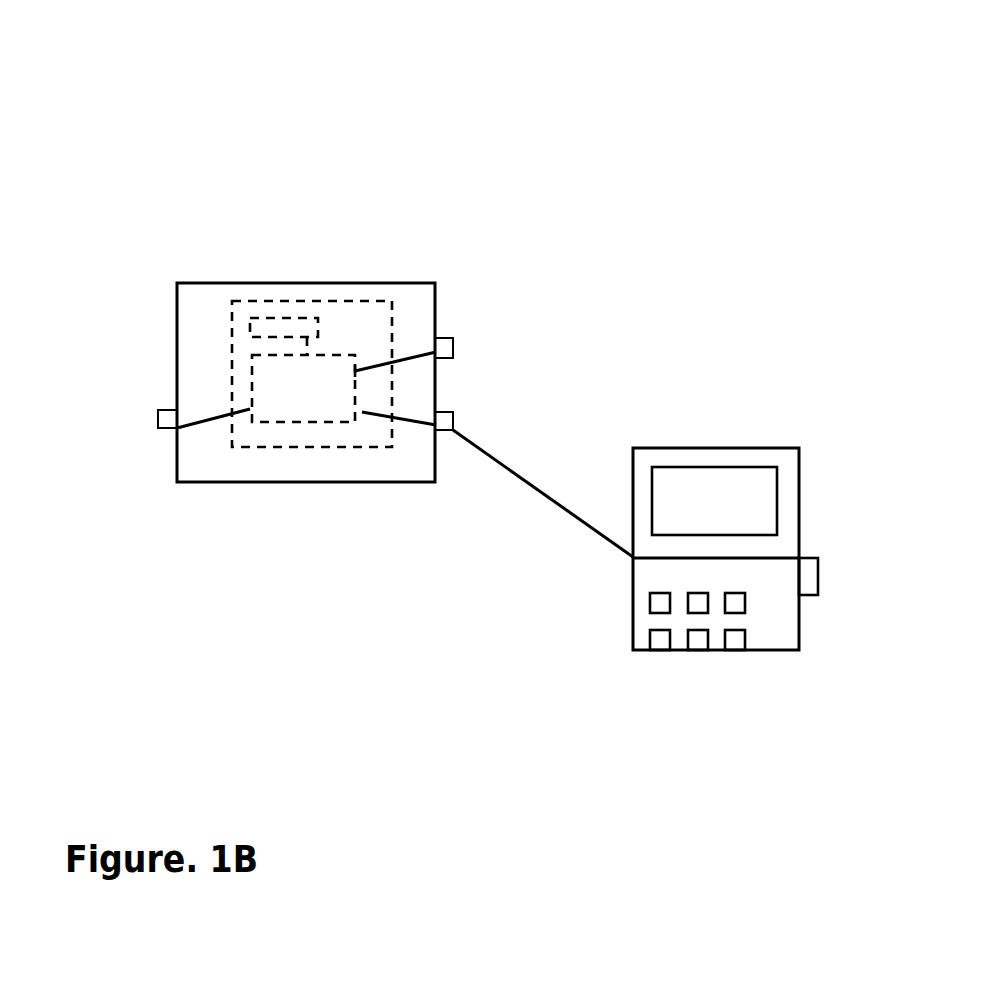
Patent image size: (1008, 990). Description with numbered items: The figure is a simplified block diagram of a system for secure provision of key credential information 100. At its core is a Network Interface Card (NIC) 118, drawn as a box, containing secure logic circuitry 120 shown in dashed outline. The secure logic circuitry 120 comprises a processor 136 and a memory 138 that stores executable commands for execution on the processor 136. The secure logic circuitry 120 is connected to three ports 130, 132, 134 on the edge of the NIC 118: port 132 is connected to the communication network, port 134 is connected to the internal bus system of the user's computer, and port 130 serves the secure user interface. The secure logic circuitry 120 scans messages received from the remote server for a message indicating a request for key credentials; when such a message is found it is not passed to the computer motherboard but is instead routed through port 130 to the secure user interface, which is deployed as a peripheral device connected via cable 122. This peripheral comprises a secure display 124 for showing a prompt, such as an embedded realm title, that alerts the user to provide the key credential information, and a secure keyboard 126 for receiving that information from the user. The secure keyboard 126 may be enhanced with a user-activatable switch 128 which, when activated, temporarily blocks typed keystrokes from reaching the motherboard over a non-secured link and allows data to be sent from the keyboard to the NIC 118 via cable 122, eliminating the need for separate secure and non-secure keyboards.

The system for secure provision of key credential information 100 is at (529, 103).
The Network Interface Card (NIC) 118 is at (197, 317).
The secure logic circuitry 120 is at (363, 318).
The cable 122 is at (508, 470).
The secure display 124 is at (708, 483).
The secure keyboard 126 is at (690, 612).
The user-activatable switch 128 is at (813, 597).
The port 130 is at (453, 412).
The port 132 is at (453, 338).
The port 134 is at (158, 428).
The processor 136 is at (305, 392).
The memory 138 is at (293, 318).